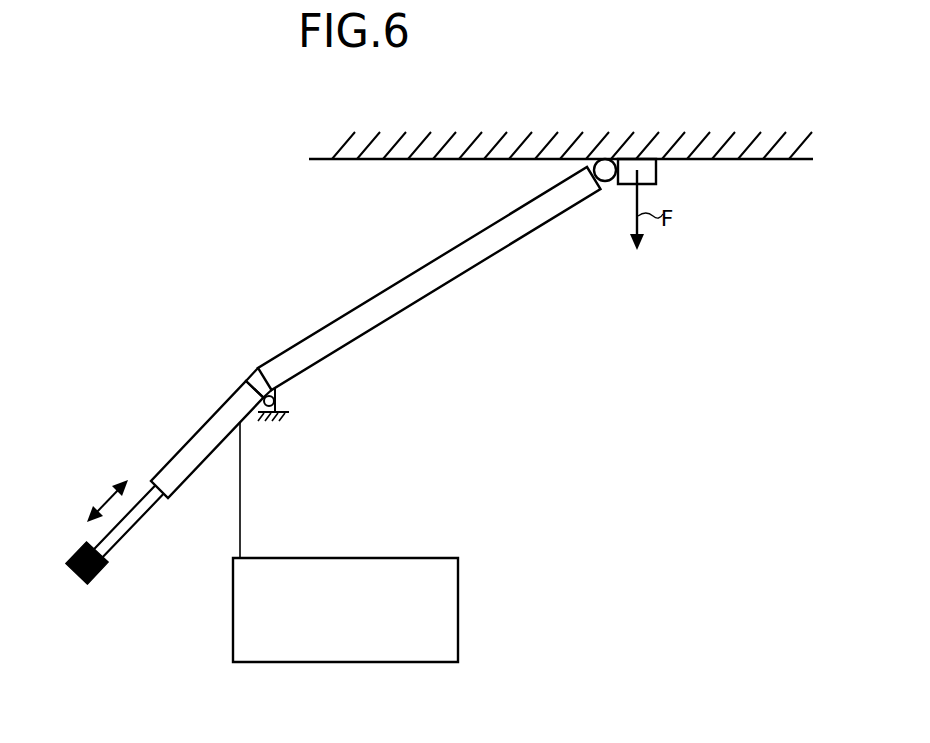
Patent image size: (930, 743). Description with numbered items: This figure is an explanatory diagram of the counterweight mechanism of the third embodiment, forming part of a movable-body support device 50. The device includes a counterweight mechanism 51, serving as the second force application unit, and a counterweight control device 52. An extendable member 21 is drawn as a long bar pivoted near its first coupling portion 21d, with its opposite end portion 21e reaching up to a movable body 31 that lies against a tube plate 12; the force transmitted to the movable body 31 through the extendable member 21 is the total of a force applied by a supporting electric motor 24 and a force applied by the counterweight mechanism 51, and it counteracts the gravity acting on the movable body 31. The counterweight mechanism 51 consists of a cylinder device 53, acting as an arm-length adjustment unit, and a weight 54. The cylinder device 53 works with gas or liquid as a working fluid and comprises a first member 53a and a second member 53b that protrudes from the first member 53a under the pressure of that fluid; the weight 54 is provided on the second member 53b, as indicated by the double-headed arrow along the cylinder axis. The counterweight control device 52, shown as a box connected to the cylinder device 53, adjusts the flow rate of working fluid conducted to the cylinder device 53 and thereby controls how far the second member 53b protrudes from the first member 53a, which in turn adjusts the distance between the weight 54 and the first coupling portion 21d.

The tube plate 12 is at (773, 160).
The extendable member 21 is at (450, 283).
The first coupling portion 21d is at (283, 368).
The arm distal end portion with roller 21e is at (582, 182).
The supporting electric motor 24 is at (276, 402).
The movable body 31 is at (656, 175).
The movable-body support device 50 is at (267, 260).
The counterweight mechanism 51 is at (40, 523).
The counterweight control device 52 is at (458, 607).
The cylinder device 53 is at (216, 528).
The first member 53a is at (178, 489).
The second member 53b is at (143, 515).
The weight 54 is at (97, 585).